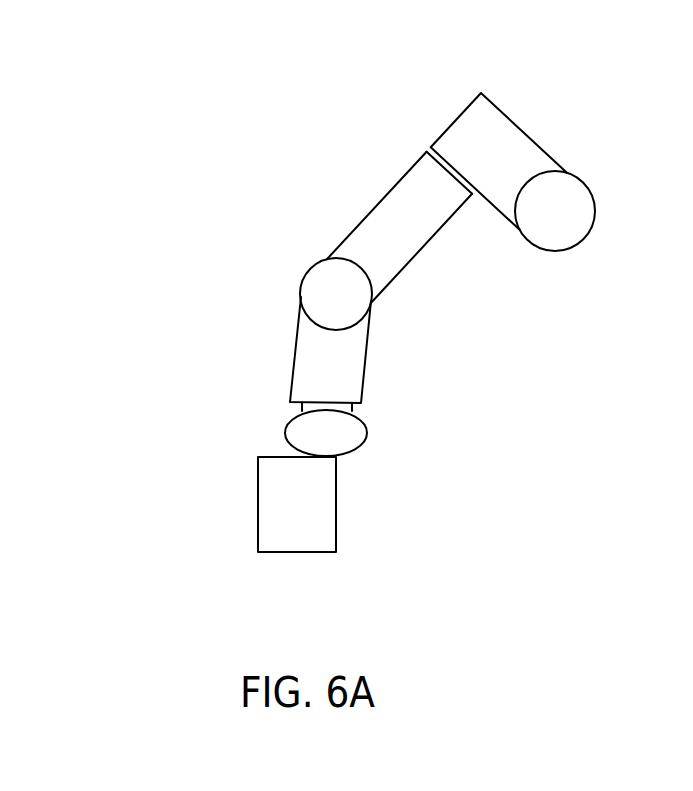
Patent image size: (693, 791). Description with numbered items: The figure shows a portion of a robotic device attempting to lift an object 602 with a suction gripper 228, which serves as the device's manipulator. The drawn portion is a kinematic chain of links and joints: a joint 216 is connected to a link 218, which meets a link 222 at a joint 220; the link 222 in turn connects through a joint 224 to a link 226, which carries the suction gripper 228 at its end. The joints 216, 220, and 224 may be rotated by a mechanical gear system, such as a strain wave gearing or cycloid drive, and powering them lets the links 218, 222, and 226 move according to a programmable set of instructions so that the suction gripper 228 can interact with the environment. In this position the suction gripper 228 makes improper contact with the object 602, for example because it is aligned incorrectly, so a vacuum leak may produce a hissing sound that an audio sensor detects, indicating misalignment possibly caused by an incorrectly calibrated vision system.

The joint 216 is at (562, 207).
The link 218 is at (503, 136).
The joint 220 is at (427, 153).
The link 222 is at (378, 232).
The joint 224 is at (305, 301).
The link 226 is at (293, 385).
The suction gripper 228 is at (288, 440).
The object 602 is at (267, 505).